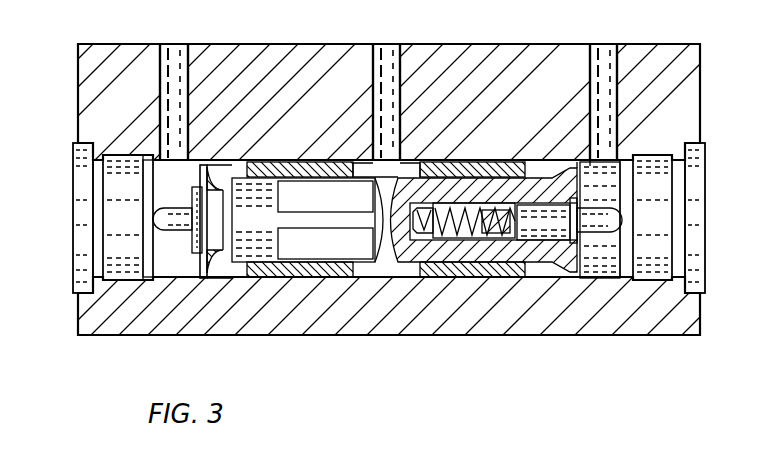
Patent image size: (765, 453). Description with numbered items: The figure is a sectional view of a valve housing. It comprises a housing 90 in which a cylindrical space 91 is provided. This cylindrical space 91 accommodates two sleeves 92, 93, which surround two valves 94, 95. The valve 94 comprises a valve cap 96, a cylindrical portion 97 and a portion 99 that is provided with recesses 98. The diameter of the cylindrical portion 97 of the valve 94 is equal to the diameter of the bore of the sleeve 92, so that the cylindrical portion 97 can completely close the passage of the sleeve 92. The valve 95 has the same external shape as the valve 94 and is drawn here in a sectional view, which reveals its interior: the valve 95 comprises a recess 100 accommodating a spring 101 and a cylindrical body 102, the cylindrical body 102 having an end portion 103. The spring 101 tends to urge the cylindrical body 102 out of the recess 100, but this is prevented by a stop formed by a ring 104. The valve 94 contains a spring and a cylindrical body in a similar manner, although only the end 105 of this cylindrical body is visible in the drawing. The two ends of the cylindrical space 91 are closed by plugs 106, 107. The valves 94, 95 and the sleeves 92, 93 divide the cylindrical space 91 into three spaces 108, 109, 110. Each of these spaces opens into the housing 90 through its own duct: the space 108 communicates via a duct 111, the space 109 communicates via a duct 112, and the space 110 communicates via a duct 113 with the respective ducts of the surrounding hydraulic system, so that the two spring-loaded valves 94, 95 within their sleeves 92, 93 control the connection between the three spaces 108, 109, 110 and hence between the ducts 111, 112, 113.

The housing 90 is at (503, 56).
The cylindrical space 91 is at (182, 268).
The sleeve 92 is at (303, 265).
The sleeve 93 is at (465, 268).
The valve 94 is at (243, 165).
The valve 95 is at (536, 264).
The valve cap 96 is at (205, 265).
The cylindrical portion 97 is at (245, 248).
The recesses 98 is at (342, 248).
The portion provided with recesses 99 is at (370, 265).
The recess 100 is at (497, 240).
The spring 101 is at (482, 165).
The cylindrical body 102 is at (568, 205).
The end portion 103 is at (587, 229).
The ring 104 is at (571, 262).
The end of cylindrical body 105 is at (169, 218).
The plug 106 is at (80, 186).
The plug 107 is at (698, 173).
The space 108 is at (190, 169).
The space 109 is at (585, 161).
The space 110 is at (407, 167).
The duct 111 is at (178, 56).
The duct 112 is at (604, 54).
The duct 113 is at (388, 54).